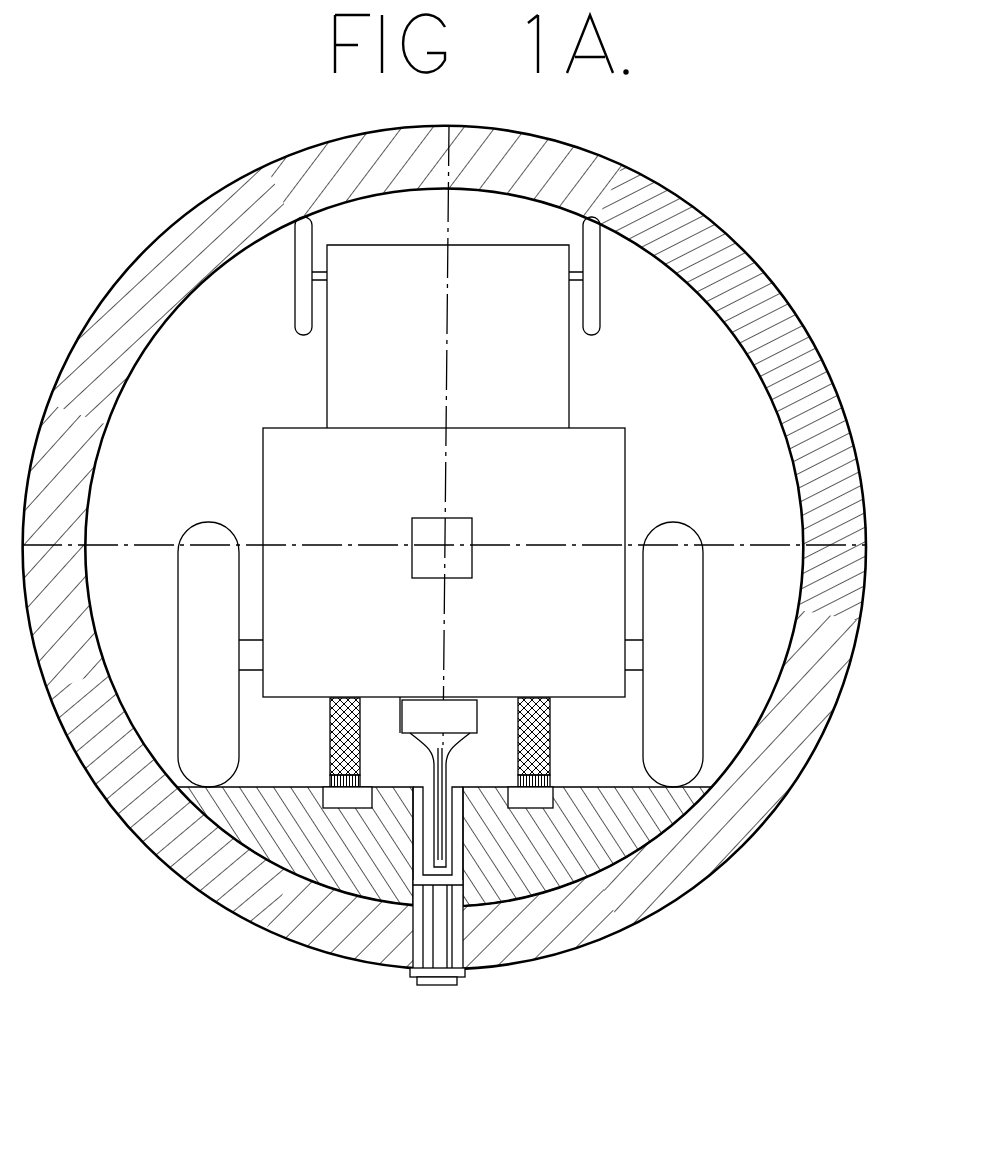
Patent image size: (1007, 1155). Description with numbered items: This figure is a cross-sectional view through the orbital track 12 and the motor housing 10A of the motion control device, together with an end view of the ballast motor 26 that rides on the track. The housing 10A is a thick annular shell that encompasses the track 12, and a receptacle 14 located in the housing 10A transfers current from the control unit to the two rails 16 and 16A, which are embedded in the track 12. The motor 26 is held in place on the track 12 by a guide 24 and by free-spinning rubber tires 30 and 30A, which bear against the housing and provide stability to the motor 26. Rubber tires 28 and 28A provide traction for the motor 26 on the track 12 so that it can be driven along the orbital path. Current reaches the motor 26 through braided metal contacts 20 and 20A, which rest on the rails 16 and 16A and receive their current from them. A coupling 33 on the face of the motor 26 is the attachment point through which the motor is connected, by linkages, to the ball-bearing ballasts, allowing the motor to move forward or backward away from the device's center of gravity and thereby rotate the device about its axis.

The housing 10A is at (558, 172).
The track 12 is at (623, 823).
The receptacle 14 is at (439, 982).
The rail 16 is at (322, 798).
The rail 16A is at (556, 804).
The braided metal contact 20 is at (332, 736).
The braided metal contact 20A is at (553, 738).
The guide 24 is at (449, 800).
The motor 26 is at (466, 245).
The rubber tire 28 is at (202, 524).
The rubber tire 28A is at (692, 522).
The free-spinning tire 30 is at (292, 320).
The free-spinning tire 30A is at (601, 322).
The coupling 33 is at (472, 516).